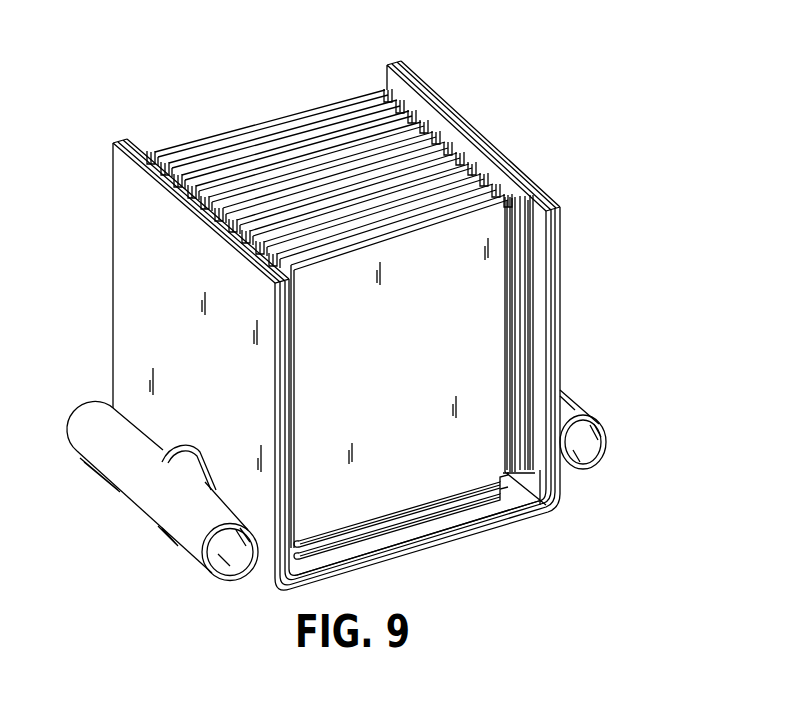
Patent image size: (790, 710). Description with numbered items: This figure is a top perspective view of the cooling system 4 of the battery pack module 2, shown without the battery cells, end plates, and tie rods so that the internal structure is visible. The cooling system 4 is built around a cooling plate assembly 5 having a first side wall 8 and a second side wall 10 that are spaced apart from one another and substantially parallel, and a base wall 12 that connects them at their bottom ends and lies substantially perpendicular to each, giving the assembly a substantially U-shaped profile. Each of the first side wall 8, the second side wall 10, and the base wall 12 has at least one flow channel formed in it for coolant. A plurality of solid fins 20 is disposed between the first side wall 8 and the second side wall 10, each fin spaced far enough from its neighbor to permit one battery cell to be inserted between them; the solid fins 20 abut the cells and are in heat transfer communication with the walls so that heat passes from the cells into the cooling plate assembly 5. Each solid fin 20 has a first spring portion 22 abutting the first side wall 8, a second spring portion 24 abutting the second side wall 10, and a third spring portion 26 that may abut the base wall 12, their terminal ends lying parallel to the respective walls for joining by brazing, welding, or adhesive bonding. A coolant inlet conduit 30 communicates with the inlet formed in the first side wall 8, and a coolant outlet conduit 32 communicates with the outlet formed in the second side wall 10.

The battery pack module 2 is at (549, 113).
The cooling system 4 is at (191, 352).
The cooling plate assembly 5 is at (560, 237).
The first side wall 8 is at (147, 257).
The second side wall 10 is at (559, 304).
The base wall 12 is at (388, 561).
The solid fins 20 is at (329, 319).
The first spring portion 22 is at (292, 275).
The second spring portion 24 is at (523, 355).
The third spring portion 26 is at (436, 520).
The coolant inlet conduit 30 is at (148, 503).
The coolant outlet conduit 32 is at (598, 412).